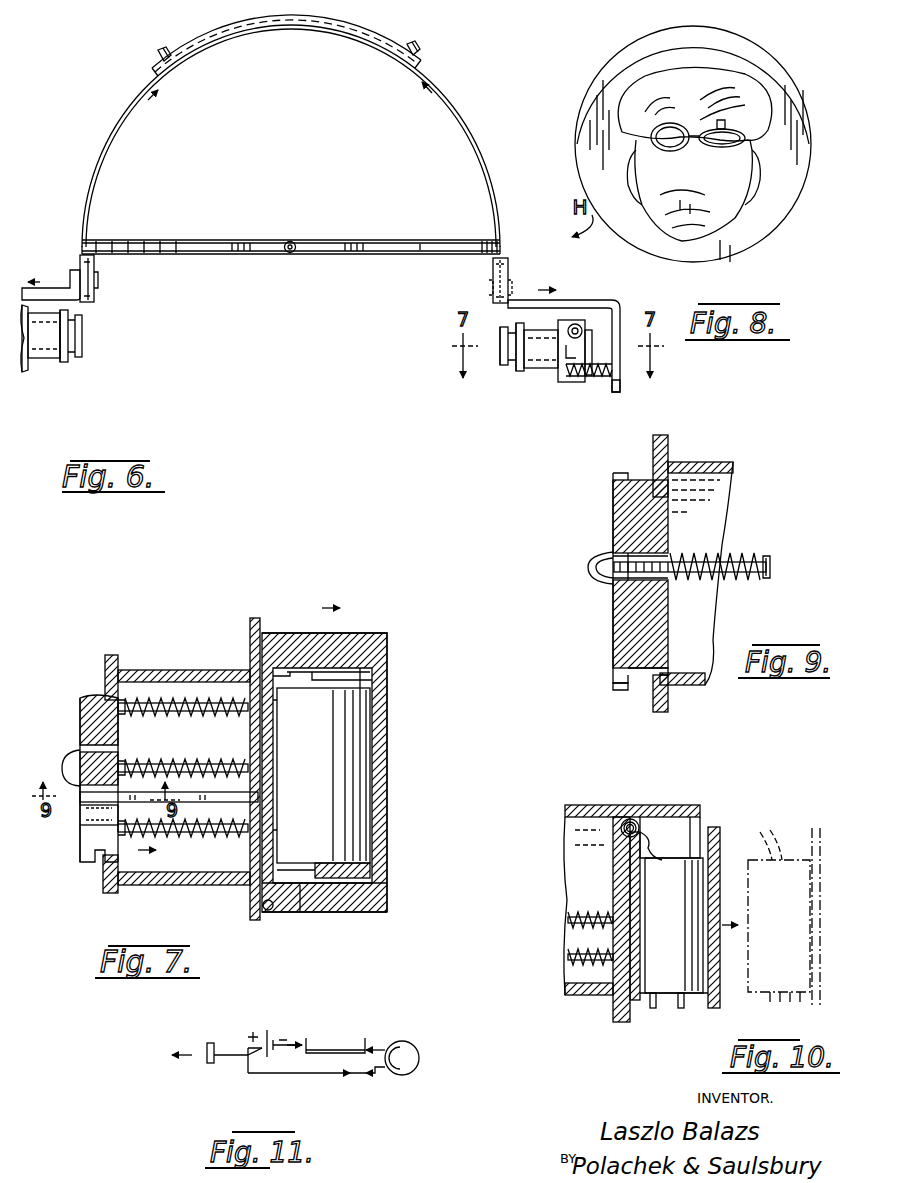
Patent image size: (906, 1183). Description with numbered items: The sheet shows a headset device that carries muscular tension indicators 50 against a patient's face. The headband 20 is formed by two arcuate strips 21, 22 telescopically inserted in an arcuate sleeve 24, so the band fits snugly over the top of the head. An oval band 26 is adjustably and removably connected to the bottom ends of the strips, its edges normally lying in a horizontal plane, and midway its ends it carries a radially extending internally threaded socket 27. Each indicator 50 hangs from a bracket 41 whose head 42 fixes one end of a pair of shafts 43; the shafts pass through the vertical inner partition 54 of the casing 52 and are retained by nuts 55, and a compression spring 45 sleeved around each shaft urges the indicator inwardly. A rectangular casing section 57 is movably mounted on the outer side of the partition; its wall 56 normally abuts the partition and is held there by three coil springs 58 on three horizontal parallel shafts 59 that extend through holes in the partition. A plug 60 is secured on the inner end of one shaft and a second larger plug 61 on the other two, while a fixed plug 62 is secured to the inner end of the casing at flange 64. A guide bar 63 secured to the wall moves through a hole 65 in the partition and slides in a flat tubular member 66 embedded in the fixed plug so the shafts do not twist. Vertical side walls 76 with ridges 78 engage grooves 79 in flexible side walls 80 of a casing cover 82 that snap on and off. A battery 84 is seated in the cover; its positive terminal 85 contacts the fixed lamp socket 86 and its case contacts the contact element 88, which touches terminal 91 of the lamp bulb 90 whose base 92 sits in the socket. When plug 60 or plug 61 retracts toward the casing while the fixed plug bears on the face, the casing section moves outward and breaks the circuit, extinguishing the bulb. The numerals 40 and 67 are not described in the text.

In FIG. 6, the headband 20 is at (393, 49).
In FIG. 6, the arcuate strip 21 is at (470, 128).
In FIG. 6, the arcuate strip 22 is at (110, 140).
In FIG. 6, the arcuate sleeve 24 is at (362, 38).
In FIG. 6, the oval band 26 is at (366, 246).
In FIG. 6, the internally threaded socket 27 is at (292, 241).
In FIG. 6, the clip 40 is at (96, 300).
In FIG. 6, the bracket 41 is at (50, 287).
In FIG. 6, the head of bracket 42 is at (620, 390).
In FIG. 6, the shaft 43 is at (598, 375).
In FIG. 6, the compression spring 45 is at (590, 378).
In FIG. 6, the muscular tension indicator 50 is at (45, 370).
In FIG. 8, the muscular tension indicator 50 is at (796, 70).
In FIG. 7, the muscular tension indicator 50 is at (412, 666).
In FIG. 6, the casing 52 is at (52, 352).
In FIG. 9, the casing 52 is at (685, 686).
In FIG. 7, the casing 52 is at (205, 670).
In FIG. 6, the vertical inner partition 54 is at (570, 382).
In FIG. 7, the vertical inner partition 54 is at (252, 860).
In FIG. 10, the vertical inner partition 54 is at (612, 980).
In FIG. 7, the nuts / holes 55 is at (252, 758).
In FIG. 7, the wall 56 is at (277, 850).
In FIG. 10, the wall 56 is at (652, 1010).
In FIG. 7, the rectangular casing section 57 is at (296, 680).
In FIG. 10, the rectangular casing section 57 is at (660, 1008).
In FIG. 9, the coil spring 58 is at (752, 578).
In FIG. 7, the coil spring 58 is at (152, 700).
In FIG. 10, the coil spring 58 is at (570, 932).
In FIG. 9, the shaft 59 is at (772, 565).
In FIG. 7, the shaft 59 is at (170, 700).
In FIG. 10, the shaft 59 is at (570, 908).
In FIG. 11, the shaft 59 is at (230, 1055).
In FIG. 8, the plug 60 is at (685, 150).
In FIG. 9, the plug 60 is at (598, 570).
In FIG. 7, the plug 60 is at (75, 755).
In FIG. 11, the plug 60 is at (207, 1060).
In FIG. 6, the second larger plug 61 is at (78, 357).
In FIG. 8, the second larger plug 61 is at (725, 192).
In FIG. 9, the second larger plug 61 is at (628, 642).
In FIG. 7, the second larger plug 61 is at (90, 845).
In FIG. 8, the fixed plug 62 is at (674, 84).
In FIG. 9, the fixed plug 62 is at (630, 507).
In FIG. 7, the fixed plug 62 is at (99, 778).
In FIG. 9, the guide bar 63 is at (700, 556).
In FIG. 7, the guide bar 63 is at (200, 830).
In FIG. 8, the flange 64 is at (788, 180).
In FIG. 9, the flange 64 is at (655, 698).
In FIG. 7, the flange 64 is at (108, 878).
In FIG. 7, the hole 65 is at (265, 808).
In FIG. 9, the flat tubular member 66 is at (640, 560).
In FIG. 7, the flat tubular member 66 is at (100, 810).
In FIG. 9, the housing top flange 67 is at (712, 462).
In FIG. 10, the housing top flange 67 is at (572, 841).
In FIG. 7, the side wall 76 is at (370, 892).
In FIG. 7, the vertical ridge 78 is at (302, 912).
In FIG. 7, the groove 79 is at (268, 912).
In FIG. 7, the side wall of casing cover 80 is at (335, 912).
In FIG. 7, the casing cover 82 is at (385, 840).
In FIG. 10, the casing cover 82 is at (822, 830).
In FIG. 7, the battery 84 is at (352, 770).
In FIG. 10, the battery 84 is at (703, 858).
In FIG. 11, the battery 84 is at (266, 1032).
In FIG. 10, the positive terminal 85 is at (660, 845).
In FIG. 11, the positive terminal 85 is at (248, 1050).
In FIG. 10, the lamp socket 86 is at (610, 806).
In FIG. 11, the lamp socket 86 is at (295, 1043).
In FIG. 10, the contact element 88 is at (632, 866).
In FIG. 11, the contact element 88 is at (340, 1045).
In FIG. 10, the electric lamp bulb 90 is at (640, 822).
In FIG. 11, the electric lamp bulb 90 is at (420, 1052).
In FIG. 11, the bulb terminal 91 is at (385, 1048).
In FIG. 10, the bulb base 92 is at (632, 820).
In FIG. 11, the bulb base 92 is at (372, 1078).